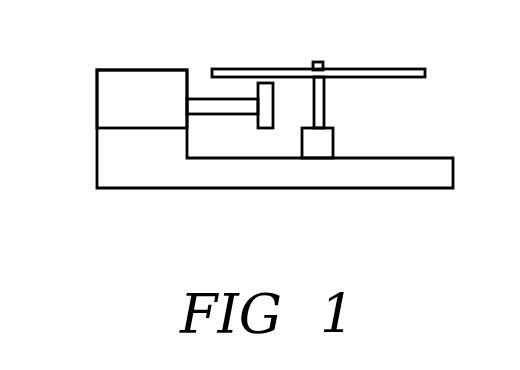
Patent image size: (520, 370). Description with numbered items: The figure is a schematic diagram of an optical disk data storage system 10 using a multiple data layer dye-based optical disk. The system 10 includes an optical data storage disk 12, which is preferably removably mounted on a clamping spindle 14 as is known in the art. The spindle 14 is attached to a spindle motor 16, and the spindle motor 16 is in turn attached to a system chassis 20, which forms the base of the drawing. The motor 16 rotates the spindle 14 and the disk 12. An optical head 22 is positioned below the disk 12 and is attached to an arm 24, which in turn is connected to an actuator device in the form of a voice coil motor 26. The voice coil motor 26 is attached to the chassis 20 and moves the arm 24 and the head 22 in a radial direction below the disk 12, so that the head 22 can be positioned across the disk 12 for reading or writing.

The optical disk data storage system 10 is at (254, 134).
The optical data storage disk 12 is at (404, 69).
The clamping spindle 14 is at (319, 95).
The spindle motor 16 is at (330, 143).
The system chassis 20 is at (413, 188).
The optical head 22 is at (264, 83).
The arm 24 is at (196, 100).
The voice coil motor 26 is at (110, 77).